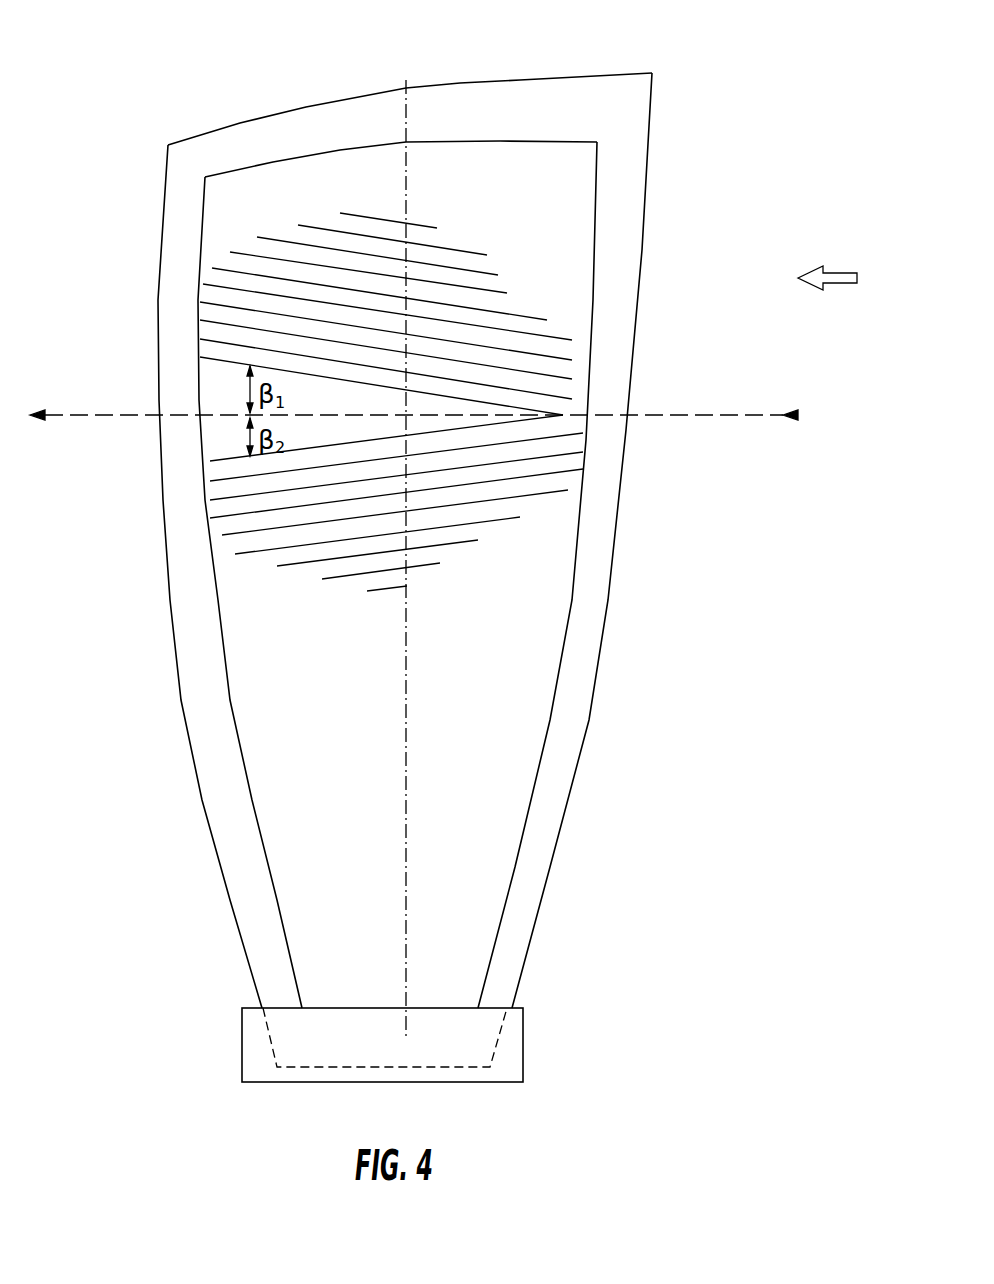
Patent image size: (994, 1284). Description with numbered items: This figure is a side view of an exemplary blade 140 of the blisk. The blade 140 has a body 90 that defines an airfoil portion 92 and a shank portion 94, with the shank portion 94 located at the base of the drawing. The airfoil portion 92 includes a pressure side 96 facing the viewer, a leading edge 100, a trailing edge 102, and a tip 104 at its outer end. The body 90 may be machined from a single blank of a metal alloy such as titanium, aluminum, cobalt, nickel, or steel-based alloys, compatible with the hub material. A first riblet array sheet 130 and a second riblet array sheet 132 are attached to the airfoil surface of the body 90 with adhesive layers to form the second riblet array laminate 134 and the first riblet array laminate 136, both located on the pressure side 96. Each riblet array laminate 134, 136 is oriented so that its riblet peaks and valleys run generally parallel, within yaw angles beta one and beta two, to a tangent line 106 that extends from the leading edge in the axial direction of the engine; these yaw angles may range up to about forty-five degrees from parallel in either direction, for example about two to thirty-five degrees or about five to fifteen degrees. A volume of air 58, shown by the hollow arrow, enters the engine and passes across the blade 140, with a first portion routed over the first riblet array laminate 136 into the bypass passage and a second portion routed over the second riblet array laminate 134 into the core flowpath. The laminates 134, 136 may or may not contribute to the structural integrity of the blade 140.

The blade 140 is at (180, 80).
The body 90 is at (627, 220).
The airfoil portion 92 is at (153, 703).
The shank portion 94 is at (222, 993).
The pressure side 96 is at (532, 828).
The leading edge 100 is at (640, 275).
The trailing edge 102 is at (157, 275).
The tip 104 is at (520, 82).
The tangent line 106 is at (738, 415).
The first riblet array sheet 130 is at (302, 533).
The second riblet array sheet 132 is at (395, 277).
The second riblet array laminate 134 is at (540, 495).
The first riblet array laminate 136 is at (548, 360).
The volume of air 58 is at (837, 268).